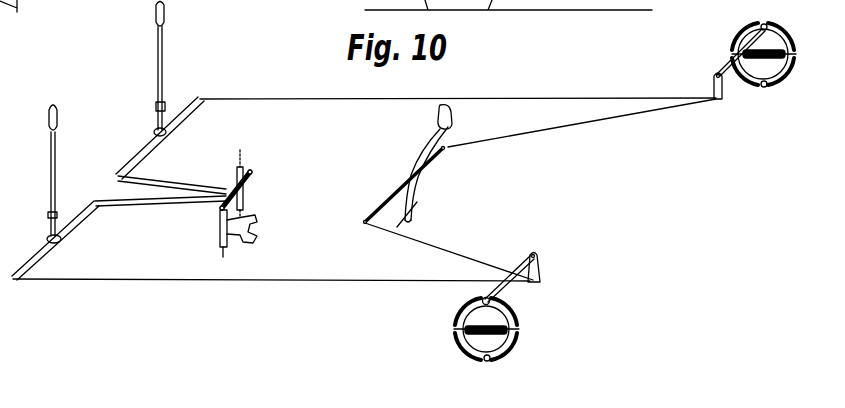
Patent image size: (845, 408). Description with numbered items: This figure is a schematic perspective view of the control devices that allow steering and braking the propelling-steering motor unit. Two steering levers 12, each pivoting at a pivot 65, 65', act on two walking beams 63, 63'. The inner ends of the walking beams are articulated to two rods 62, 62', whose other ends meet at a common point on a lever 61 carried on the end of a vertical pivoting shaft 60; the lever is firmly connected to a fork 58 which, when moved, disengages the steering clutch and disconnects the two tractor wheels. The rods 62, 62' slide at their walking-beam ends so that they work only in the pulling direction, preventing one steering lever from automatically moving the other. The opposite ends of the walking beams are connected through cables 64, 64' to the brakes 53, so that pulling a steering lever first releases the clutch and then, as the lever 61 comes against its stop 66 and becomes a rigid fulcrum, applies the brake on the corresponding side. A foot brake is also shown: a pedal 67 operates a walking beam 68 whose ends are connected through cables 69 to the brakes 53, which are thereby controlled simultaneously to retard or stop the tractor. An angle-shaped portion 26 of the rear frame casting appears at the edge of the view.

The angle-shaped portion 26 is at (23, 13).
The steering lever 12 is at (52, 157).
The pivot 65 is at (35, 229).
The pivot 65' is at (197, 83).
The walking beam 63 is at (61, 240).
The walking beam 63' is at (148, 138).
The rod 62 is at (160, 219).
The rod 62' is at (172, 171).
The stop 66 is at (245, 168).
The lever 61 is at (252, 173).
The vertical pivoting shaft 60 is at (222, 227).
The fork 58 is at (257, 223).
The cable 64 is at (271, 296).
The cable 64' is at (458, 84).
The pedal 67 is at (420, 138).
The walking beam 68 is at (383, 198).
The cable 69 is at (595, 120).
The brake 53 is at (793, 33).